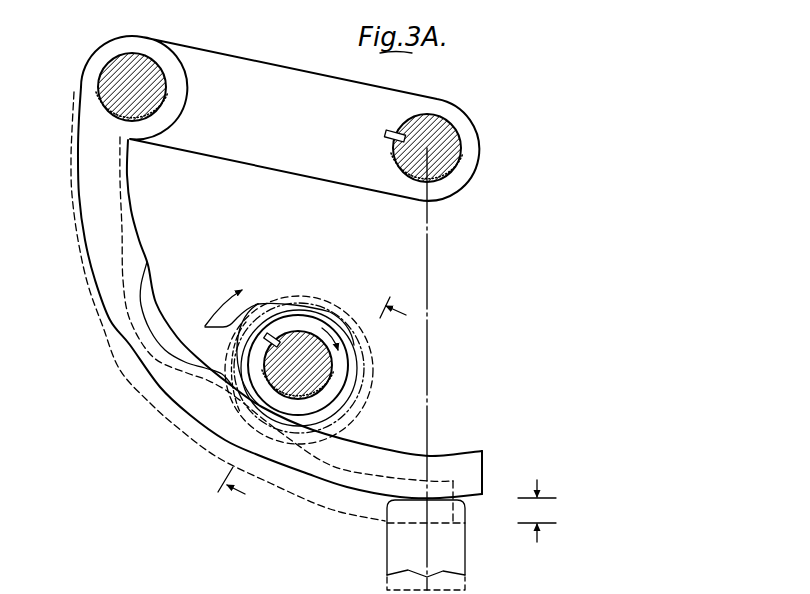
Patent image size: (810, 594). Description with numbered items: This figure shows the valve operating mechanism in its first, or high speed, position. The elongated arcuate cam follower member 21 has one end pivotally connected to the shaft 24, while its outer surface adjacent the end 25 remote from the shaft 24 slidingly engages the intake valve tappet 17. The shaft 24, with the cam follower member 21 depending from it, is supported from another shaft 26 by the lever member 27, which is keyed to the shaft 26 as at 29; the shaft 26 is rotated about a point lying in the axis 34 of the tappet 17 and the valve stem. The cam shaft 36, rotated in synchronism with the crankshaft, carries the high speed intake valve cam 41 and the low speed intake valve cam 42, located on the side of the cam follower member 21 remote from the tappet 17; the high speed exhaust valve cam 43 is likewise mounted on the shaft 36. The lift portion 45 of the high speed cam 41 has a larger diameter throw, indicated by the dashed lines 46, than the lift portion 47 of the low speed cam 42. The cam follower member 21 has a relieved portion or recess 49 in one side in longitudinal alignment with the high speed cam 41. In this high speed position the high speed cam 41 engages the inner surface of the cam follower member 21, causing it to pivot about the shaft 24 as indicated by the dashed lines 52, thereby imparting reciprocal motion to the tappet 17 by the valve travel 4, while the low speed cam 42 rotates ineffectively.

The valve travel distance 4 is at (427, 419).
The intake valve tappet 17 is at (466, 550).
The cam follower member 21 is at (377, 448).
The shaft 24 is at (145, 63).
The end of cam follower member 25 is at (462, 450).
The shaft 26 is at (462, 146).
The lever member 27 is at (310, 72).
The key 29 is at (397, 128).
The axis of tappets and valve stems 34 is at (428, 300).
The cam shaft 36 is at (316, 333).
The high speed intake valve cam 41 is at (261, 303).
The low speed intake valve cam 42 is at (292, 318).
The high speed exhaust valve cam 43 is at (360, 388).
The lift portion of high speed intake cam 45 is at (219, 312).
The dashed lines indicating throw of high speed cam 46 is at (373, 357).
The lift portion of low speed intake cam 47 is at (246, 322).
The relieved portion or recess 49 is at (150, 320).
The dashed lines indicating pivoted position 52 is at (193, 437).